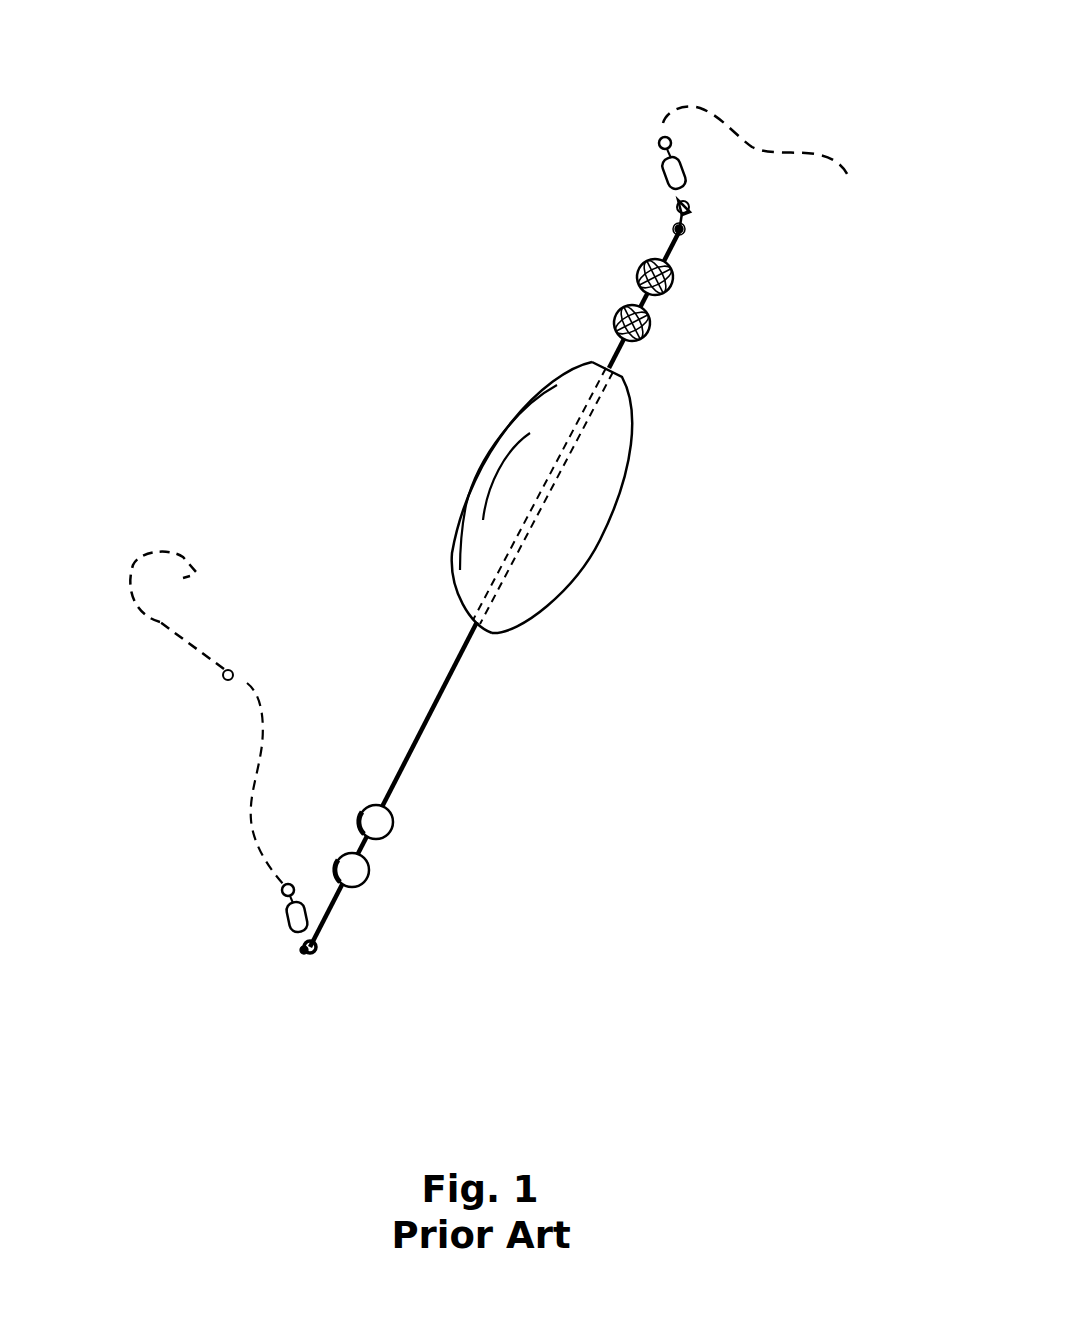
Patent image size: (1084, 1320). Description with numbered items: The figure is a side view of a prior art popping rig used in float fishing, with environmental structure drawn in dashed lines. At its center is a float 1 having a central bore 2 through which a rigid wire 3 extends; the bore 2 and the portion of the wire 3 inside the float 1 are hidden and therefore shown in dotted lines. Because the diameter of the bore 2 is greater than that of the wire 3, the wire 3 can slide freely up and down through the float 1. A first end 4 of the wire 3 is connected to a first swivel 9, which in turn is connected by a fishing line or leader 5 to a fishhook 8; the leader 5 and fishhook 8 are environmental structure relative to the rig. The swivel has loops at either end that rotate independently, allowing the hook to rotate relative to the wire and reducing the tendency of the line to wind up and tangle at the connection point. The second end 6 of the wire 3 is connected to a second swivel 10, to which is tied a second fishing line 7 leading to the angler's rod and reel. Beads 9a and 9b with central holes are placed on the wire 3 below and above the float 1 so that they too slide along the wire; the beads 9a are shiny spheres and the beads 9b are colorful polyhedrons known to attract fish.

The float 1 is at (555, 418).
The central bore 2 is at (542, 485).
The rigid wire 3 is at (446, 688).
The first end 4 is at (322, 938).
The leader 5 is at (250, 807).
The second end 6 is at (685, 223).
The second fishing line 7 is at (752, 147).
The fishhook 8 is at (160, 622).
The first swivel 9 is at (290, 917).
The beads 9a is at (355, 878).
The beads 9b is at (622, 310).
The second swivel 10 is at (687, 177).